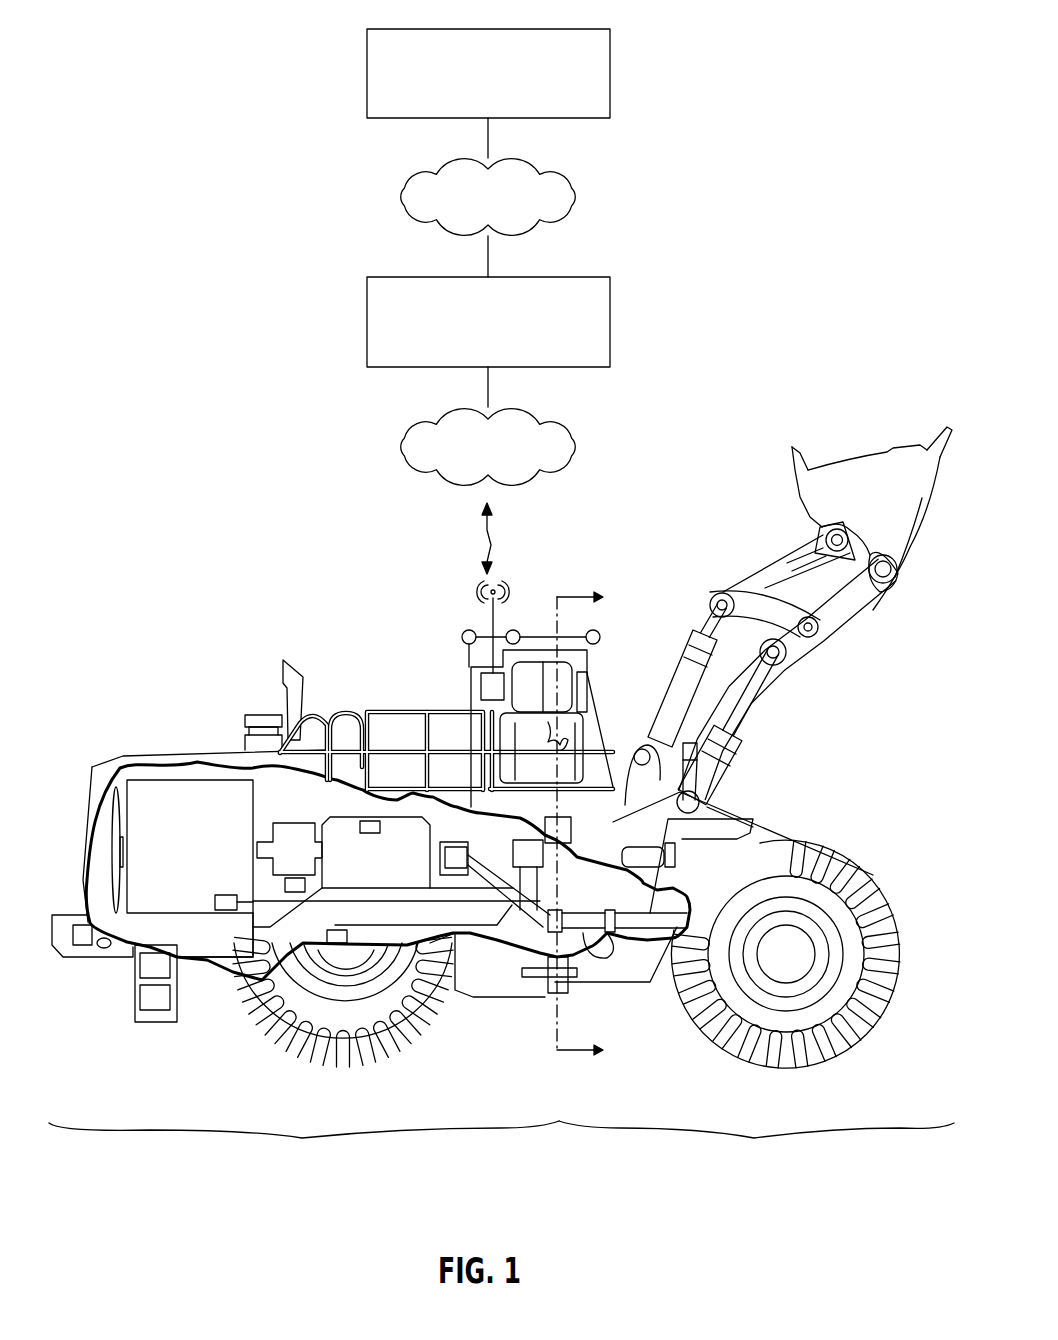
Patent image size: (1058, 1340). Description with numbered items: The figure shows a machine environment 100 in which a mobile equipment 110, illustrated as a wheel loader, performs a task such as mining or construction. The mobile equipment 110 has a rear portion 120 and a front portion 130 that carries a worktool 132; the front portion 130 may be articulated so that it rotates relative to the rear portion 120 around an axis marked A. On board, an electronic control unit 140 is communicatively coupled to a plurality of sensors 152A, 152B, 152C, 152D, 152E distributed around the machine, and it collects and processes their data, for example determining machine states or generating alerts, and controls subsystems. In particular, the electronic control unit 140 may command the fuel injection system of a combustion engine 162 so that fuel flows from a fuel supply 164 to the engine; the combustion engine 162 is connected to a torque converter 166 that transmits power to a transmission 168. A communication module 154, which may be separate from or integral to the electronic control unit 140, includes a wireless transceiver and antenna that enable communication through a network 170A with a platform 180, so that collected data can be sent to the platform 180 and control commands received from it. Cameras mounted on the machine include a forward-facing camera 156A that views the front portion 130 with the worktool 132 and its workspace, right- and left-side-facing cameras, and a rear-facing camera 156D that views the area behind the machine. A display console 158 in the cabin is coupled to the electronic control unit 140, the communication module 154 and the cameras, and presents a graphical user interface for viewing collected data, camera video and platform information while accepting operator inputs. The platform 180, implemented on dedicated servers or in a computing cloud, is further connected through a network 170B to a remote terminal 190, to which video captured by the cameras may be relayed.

The machine environment 100 is at (795, 100).
The mobile equipment 110 is at (836, 813).
The rear portion 120 is at (304, 1056).
The front portion 130 is at (756, 1007).
The worktool 132 is at (892, 515).
The electronic control unit (ECU) 140 is at (517, 902).
The sensor 152A is at (370, 818).
The sensor 152B is at (215, 900).
The sensor 152C is at (762, 818).
The sensor 152D is at (335, 947).
The sensor 152E is at (288, 880).
The communication module 154 is at (470, 667).
The forward-facing camera 156A is at (599, 633).
The rear-facing camera 156D is at (462, 631).
The display console 158 is at (590, 694).
The combustion engine 162 is at (210, 835).
The fuel supply 164 is at (235, 932).
The torque converter 166 is at (288, 820).
The transmission 168 is at (393, 876).
The network 170A is at (584, 446).
The network 170B is at (584, 196).
The platform 180 is at (437, 277).
The remote terminal 190 is at (437, 29).